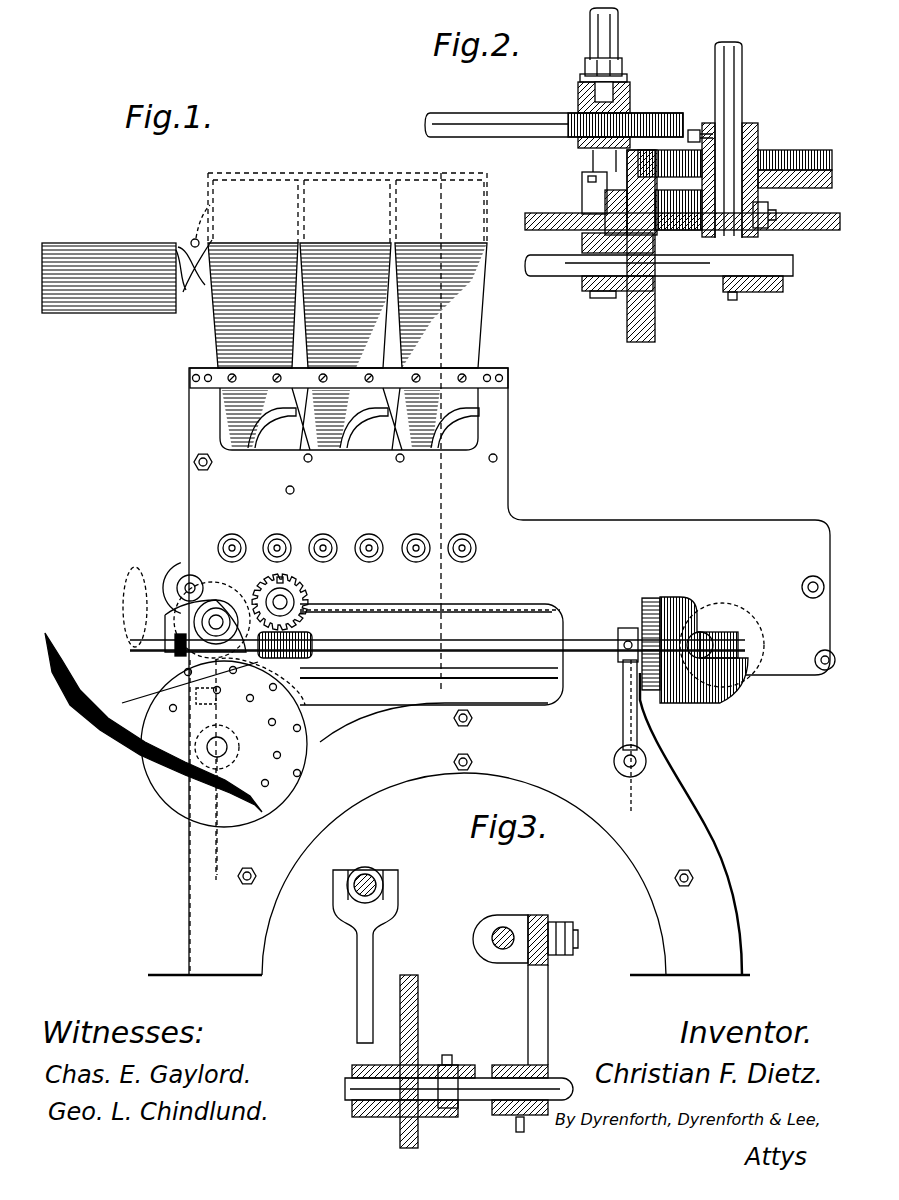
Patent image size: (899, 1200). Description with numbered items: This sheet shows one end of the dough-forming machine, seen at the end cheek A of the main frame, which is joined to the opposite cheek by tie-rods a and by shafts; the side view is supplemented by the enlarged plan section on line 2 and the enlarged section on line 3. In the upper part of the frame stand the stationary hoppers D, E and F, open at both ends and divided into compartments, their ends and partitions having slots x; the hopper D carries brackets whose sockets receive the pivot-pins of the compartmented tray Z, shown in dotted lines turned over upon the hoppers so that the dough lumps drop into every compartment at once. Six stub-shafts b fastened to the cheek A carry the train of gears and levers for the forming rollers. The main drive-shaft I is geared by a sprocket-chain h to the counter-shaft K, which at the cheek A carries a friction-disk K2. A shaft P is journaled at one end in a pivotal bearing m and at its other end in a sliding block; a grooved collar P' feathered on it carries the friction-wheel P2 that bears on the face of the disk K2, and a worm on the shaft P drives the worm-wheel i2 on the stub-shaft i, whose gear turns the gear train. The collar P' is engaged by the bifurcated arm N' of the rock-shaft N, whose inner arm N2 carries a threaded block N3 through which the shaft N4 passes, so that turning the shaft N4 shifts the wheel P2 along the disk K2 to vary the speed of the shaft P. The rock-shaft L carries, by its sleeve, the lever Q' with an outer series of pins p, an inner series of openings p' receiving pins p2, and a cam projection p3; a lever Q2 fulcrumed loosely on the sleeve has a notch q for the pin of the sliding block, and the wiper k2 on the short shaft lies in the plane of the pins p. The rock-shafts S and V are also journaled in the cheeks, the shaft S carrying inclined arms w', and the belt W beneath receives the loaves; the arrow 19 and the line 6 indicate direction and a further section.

In FIG. 1, the end cheek A is at (748, 530).
In FIG. 2, the end cheek A is at (808, 232).
In FIG. 3, the end cheek A is at (420, 1042).
In FIG. 1, the tray Z is at (264, 247).
In FIG. 1, the receptacle pivot bracket Z' is at (185, 241).
In FIG. 1, the hopper D is at (253, 305).
In FIG. 1, the hopper E is at (345, 305).
In FIG. 1, the hopper F is at (441, 305).
In FIG. 1, the slots x is at (350, 419).
In FIG. 1, the tie-rods a is at (194, 465).
In FIG. 1, the rock-shaft S is at (303, 460).
In FIG. 1, the inclined arms w' is at (429, 468).
In FIG. 1, the rock-shaft V is at (295, 491).
In FIG. 1, the stub-shafts b is at (240, 540).
In FIG. 1, the belt W is at (186, 576).
In FIG. 1, the sprocket-chain h is at (218, 618).
In FIG. 1, the stub-shaft i is at (288, 598).
In FIG. 1, the worm-wheel i2 is at (308, 600).
In FIG. 1, the arm or wiper k2 is at (196, 626).
In FIG. 1, the shaft P is at (437, 623).
In FIG. 2, the shaft P is at (659, 306).
In FIG. 3, the shaft P is at (351, 956).
In FIG. 1, the direction arrow 19 is at (390, 620).
In FIG. 1, the cam projection p3 is at (334, 694).
In FIG. 1, the notch q is at (228, 676).
In FIG. 1, the arm or lever Q2 is at (208, 752).
In FIG. 1, the pins p2 is at (223, 697).
In FIG. 1, the openings p' is at (271, 756).
In FIG. 1, the pins p is at (275, 714).
In FIG. 1, the rock-shaft L is at (215, 752).
In FIG. 1, the lever Q' is at (225, 816).
In FIG. 1, the arrow 6 is at (225, 880).
In FIG. 1, the grooved collar P' is at (632, 607).
In FIG. 2, the grooved collar P' is at (601, 256).
In FIG. 3, the grooved collar P' is at (365, 865).
In FIG. 1, the friction-wheel P2 is at (651, 598).
In FIG. 2, the friction-wheel P2 is at (641, 342).
In FIG. 1, the friction-disk K2 is at (748, 688).
In FIG. 2, the friction-disk K2 is at (770, 150).
In FIG. 1, the pivotal bearing m is at (722, 640).
In FIG. 2, the pivotal bearing m is at (770, 292).
In FIG. 1, the main drive-shaft I is at (808, 582).
In FIG. 1, the section line 2 is at (783, 586).
In FIG. 1, the arm N' is at (608, 736).
In FIG. 2, the arm N' is at (592, 267).
In FIG. 3, the arm N' is at (332, 1002).
In FIG. 1, the rock-shaft N is at (664, 760).
In FIG. 2, the rock-shaft N is at (624, 34).
In FIG. 3, the rock-shaft N is at (470, 1068).
In FIG. 1, the section line 3 is at (672, 797).
In FIG. 2, the block N3 is at (584, 104).
In FIG. 3, the block N3 is at (520, 928).
In FIG. 2, the arm N2 is at (632, 98).
In FIG. 3, the arm N2 is at (548, 1002).
In FIG. 2, the shaft N4 is at (500, 140).
In FIG. 3, the shaft N4 is at (492, 938).
In FIG. 2, the counter-shaft K is at (744, 80).